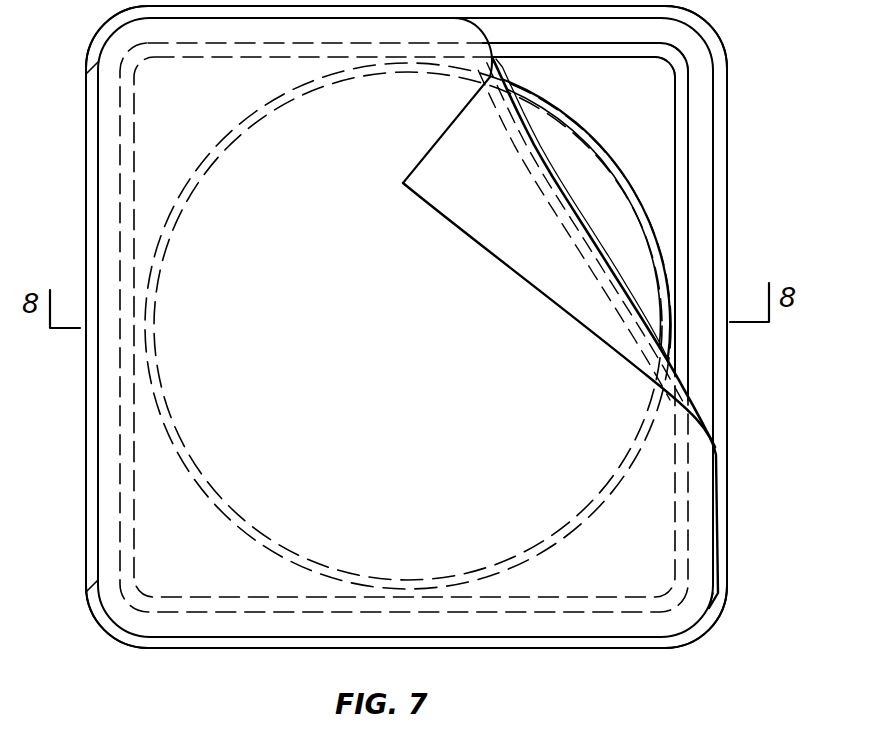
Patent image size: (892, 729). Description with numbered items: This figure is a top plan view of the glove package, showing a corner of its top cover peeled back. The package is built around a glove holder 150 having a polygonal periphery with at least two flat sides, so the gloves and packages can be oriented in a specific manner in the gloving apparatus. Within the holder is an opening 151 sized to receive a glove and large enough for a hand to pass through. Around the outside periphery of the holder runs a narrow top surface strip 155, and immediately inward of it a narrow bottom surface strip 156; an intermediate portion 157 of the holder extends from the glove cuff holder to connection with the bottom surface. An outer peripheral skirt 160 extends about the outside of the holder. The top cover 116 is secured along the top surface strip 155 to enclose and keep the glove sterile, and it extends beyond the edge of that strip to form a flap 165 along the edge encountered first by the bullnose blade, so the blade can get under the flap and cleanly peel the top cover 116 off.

The glove holder 150 is at (738, 253).
The opening 151 is at (610, 215).
The top surface strip 155 is at (703, 145).
The bottom surface strip 156 is at (680, 107).
The intermediate portion 157 is at (658, 87).
The outer peripheral skirt 160 is at (720, 212).
The top cover 116 is at (657, 343).
The flap 165 is at (715, 517).